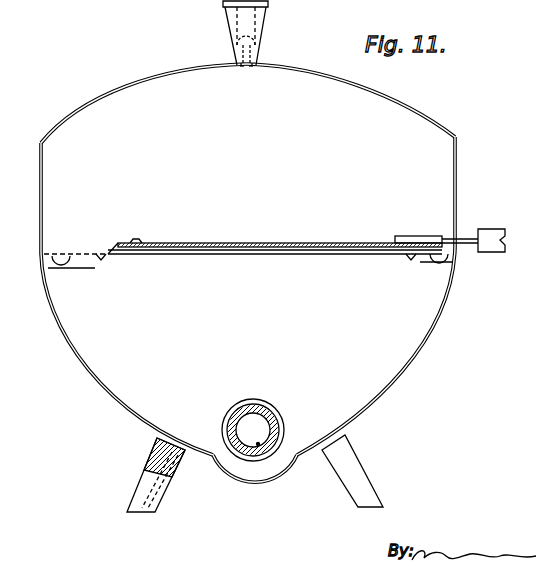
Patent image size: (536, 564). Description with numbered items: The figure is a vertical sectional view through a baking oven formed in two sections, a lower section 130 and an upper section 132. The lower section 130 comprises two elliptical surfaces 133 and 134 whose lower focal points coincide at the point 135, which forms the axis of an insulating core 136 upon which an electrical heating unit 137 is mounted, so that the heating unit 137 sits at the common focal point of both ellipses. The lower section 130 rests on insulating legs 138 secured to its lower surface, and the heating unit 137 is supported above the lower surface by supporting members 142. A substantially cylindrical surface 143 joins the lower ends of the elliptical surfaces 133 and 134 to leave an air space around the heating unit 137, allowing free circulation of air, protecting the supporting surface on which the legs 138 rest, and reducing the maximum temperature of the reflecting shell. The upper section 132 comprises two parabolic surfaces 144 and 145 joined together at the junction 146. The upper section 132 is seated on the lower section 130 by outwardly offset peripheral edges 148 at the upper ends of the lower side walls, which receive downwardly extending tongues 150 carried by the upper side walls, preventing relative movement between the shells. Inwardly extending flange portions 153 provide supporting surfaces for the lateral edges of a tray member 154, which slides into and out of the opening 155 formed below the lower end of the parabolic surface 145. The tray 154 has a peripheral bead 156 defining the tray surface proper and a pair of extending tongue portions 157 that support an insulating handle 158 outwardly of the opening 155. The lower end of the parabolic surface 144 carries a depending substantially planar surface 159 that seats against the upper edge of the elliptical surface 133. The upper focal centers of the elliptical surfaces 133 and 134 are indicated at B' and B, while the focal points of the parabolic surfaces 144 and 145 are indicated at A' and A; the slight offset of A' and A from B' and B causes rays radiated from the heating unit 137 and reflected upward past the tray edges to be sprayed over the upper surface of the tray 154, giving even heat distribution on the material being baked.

The lower section 130 is at (276, 282).
The upper section 132 is at (283, 85).
The elliptical surface 133 is at (108, 393).
The elliptical surface 134 is at (380, 407).
The point 135 is at (255, 430).
The insulating core 136 is at (250, 415).
The electrical heating unit 137 is at (230, 418).
The insulating legs 138 is at (150, 478).
The supporting members 142 is at (225, 20).
The substantially cylindrical surface 143 is at (252, 480).
The parabolic surface 144 is at (143, 78).
The parabolic surface 145 is at (416, 106).
The junction 146 is at (245, 70).
The outwardly offset peripheral edges 148 is at (65, 270).
The downwardly extending tongues 150 is at (60, 256).
The inwardly extending flange portions 153 is at (148, 257).
The tray member 154 is at (215, 241).
The opening 155 is at (460, 170).
The peripheral bead 156 is at (382, 241).
The tongue portions 157 is at (470, 240).
The insulating handle 158 is at (492, 252).
The depending substantially planar surface 159 is at (44, 170).
The focal point A is at (370, 176).
The upper focal center B is at (410, 170).
The focal point A' is at (134, 199).
The upper focal center B' is at (123, 174).